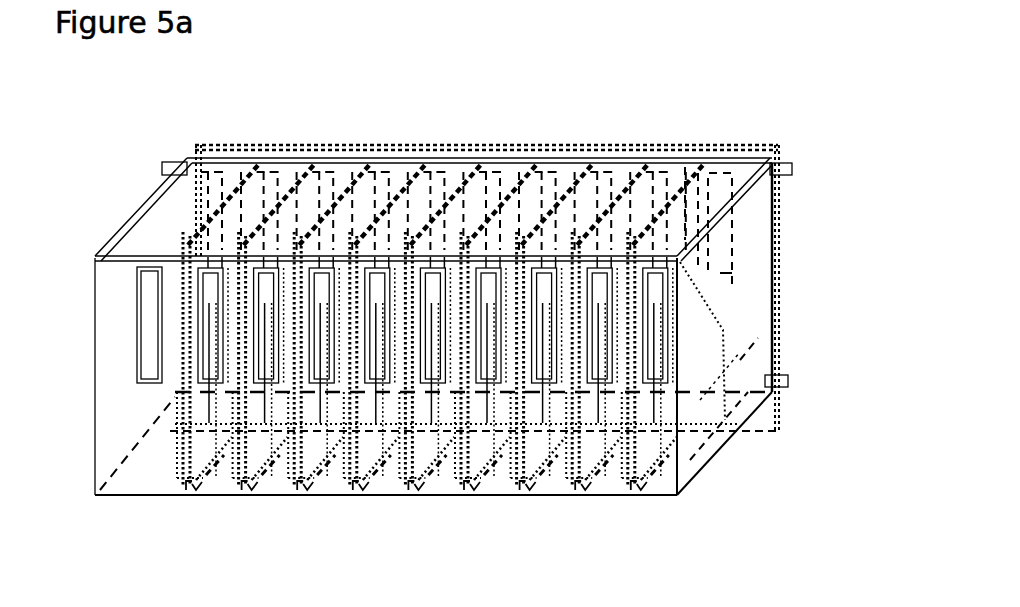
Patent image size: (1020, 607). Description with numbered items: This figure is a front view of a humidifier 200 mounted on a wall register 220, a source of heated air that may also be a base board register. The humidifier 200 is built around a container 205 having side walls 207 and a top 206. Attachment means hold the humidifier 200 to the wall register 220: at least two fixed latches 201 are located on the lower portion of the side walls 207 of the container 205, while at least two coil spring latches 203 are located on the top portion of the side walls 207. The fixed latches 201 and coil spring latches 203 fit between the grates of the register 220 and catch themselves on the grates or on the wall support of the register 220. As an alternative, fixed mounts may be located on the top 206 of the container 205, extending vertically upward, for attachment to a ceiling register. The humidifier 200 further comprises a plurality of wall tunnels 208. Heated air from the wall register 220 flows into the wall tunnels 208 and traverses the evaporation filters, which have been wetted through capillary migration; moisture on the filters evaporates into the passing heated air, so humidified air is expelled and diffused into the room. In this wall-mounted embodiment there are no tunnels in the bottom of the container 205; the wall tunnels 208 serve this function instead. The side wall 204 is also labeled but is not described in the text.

The humidifier 200 is at (136, 168).
The fixed latches 201 is at (788, 380).
The coil spring latches 203 is at (792, 168).
The side wall 204 is at (758, 277).
The container 205 is at (750, 334).
The top 206 is at (565, 160).
The side wall 207 is at (530, 288).
The wall tunnels 208 is at (287, 173).
The wall register 220 is at (757, 427).